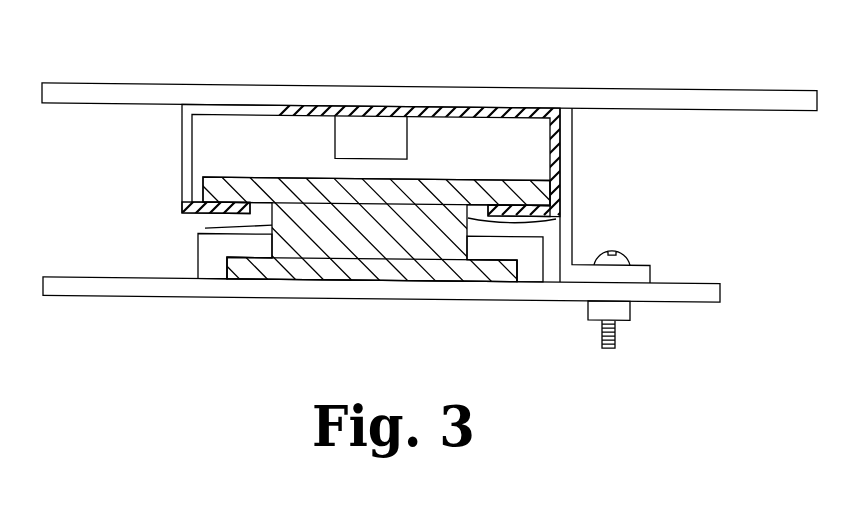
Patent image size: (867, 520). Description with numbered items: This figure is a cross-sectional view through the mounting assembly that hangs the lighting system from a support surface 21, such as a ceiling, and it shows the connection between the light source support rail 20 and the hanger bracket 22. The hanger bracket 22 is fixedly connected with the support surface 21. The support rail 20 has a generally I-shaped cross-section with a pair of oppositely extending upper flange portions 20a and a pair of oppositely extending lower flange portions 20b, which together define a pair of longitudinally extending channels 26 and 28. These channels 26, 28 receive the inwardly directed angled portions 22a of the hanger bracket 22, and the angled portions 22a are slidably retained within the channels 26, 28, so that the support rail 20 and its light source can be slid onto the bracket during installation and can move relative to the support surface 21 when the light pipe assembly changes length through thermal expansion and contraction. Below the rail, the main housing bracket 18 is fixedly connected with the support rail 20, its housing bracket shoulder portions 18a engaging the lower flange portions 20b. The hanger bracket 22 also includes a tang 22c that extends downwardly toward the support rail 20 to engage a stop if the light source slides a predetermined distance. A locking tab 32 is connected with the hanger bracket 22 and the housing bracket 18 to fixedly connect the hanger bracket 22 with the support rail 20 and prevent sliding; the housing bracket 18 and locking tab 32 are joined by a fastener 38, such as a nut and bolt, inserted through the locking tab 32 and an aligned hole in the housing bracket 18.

The main housing bracket 18 is at (688, 292).
The housing bracket shoulder portions 18a is at (198, 254).
The light source support rail 20 is at (418, 270).
The upper flange portions 20a is at (230, 191).
The lower flange portions 20b is at (232, 268).
The support surface 21 is at (110, 91).
The hanger bracket 22 is at (240, 93).
The angled portions 22a is at (215, 213).
The tang 22c is at (365, 132).
The channel 26 is at (205, 228).
The channel 28 is at (545, 225).
The locking tab 32 is at (566, 127).
The fastener 38 is at (602, 340).